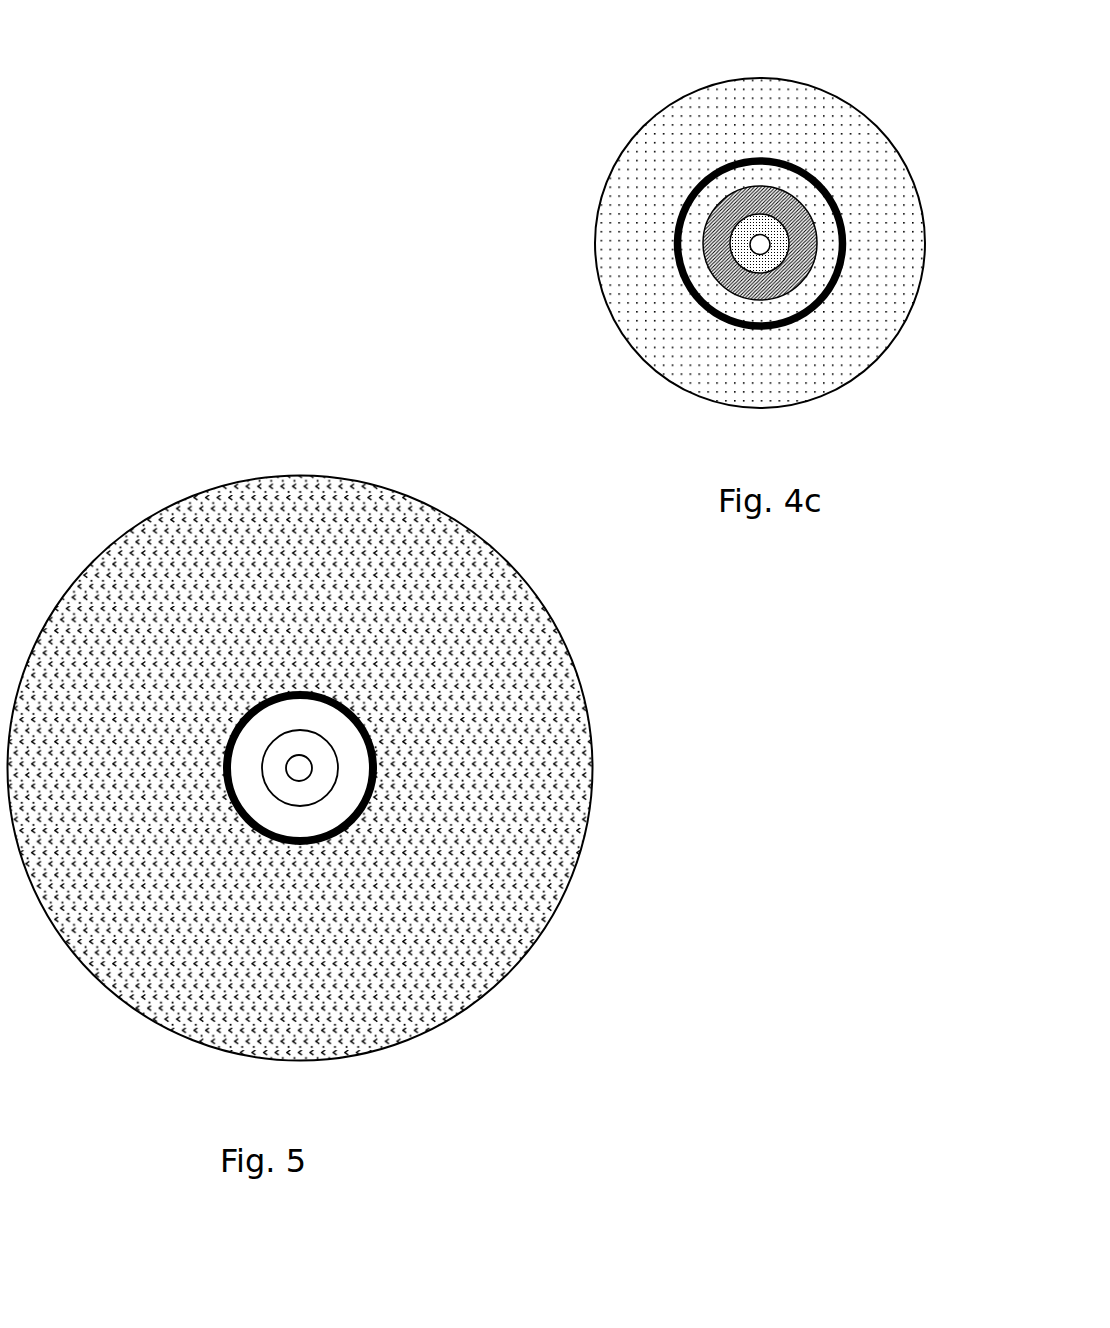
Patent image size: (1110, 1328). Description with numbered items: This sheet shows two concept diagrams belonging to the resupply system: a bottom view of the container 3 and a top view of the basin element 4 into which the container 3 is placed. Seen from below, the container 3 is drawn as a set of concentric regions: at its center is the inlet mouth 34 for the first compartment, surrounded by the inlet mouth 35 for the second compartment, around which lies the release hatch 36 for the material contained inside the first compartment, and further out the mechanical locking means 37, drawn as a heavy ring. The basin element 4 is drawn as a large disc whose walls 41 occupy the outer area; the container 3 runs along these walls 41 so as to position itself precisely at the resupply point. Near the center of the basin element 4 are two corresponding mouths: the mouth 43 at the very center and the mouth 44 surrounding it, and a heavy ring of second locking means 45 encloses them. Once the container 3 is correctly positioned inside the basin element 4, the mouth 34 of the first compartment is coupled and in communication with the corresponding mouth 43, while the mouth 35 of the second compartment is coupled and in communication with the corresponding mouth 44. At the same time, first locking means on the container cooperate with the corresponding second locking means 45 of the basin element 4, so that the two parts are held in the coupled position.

In FIG. 4C, the container 3 is at (587, 170).
In FIG. 4C, the inlet mouth 34 is at (751, 248).
In FIG. 4C, the inlet mouth 35 is at (756, 221).
In FIG. 4C, the release hatch 36 is at (712, 239).
In FIG. 4C, the mechanical locking means 37 is at (757, 148).
In FIG. 5, the basin element 4 is at (221, 466).
In FIG. 5, the walls 41 is at (392, 533).
In FIG. 5, the mouth 43 is at (300, 770).
In FIG. 5, the mouth 44 is at (302, 752).
In FIG. 5, the second locking means 45 is at (344, 699).